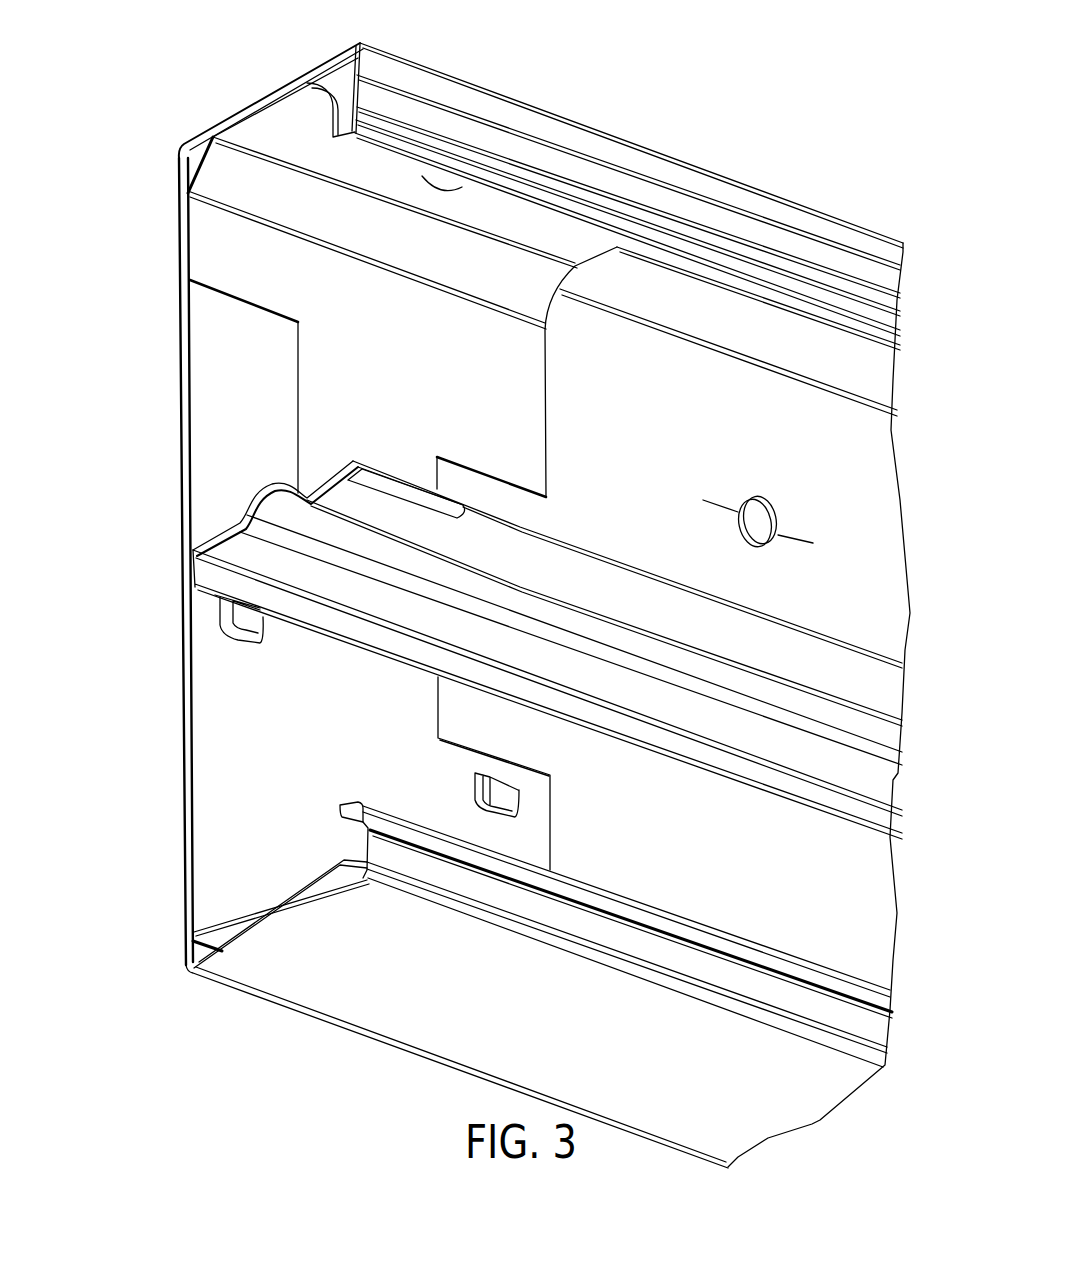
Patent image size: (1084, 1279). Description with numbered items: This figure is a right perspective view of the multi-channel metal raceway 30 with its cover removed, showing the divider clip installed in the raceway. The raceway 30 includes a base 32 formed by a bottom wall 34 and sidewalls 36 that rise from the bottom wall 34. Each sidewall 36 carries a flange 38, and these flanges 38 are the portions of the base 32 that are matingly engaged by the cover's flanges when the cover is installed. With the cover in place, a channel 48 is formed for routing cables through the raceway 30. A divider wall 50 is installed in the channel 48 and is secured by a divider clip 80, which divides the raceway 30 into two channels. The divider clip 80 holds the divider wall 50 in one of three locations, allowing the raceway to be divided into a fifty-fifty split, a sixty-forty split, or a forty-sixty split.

The multi-channel metal raceway 30 is at (156, 351).
The base 32 is at (180, 408).
The bottom wall 34 is at (180, 448).
The sidewall 36 is at (268, 88).
The flange 38 is at (420, 112).
The channel 48 is at (268, 738).
The divider wall 50 is at (353, 597).
The divider clip 80 is at (200, 218).